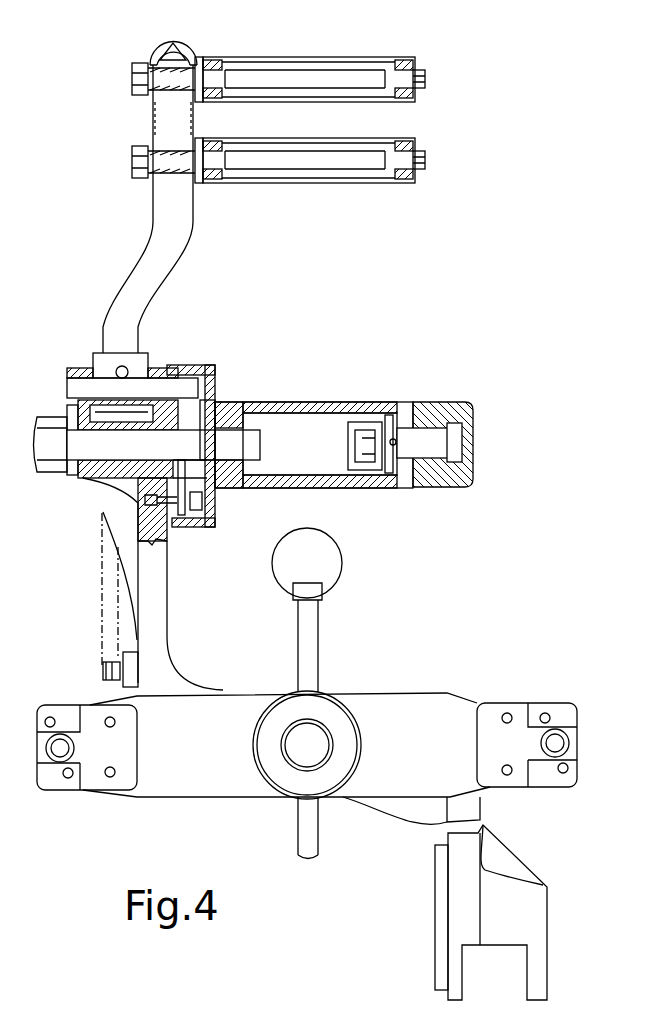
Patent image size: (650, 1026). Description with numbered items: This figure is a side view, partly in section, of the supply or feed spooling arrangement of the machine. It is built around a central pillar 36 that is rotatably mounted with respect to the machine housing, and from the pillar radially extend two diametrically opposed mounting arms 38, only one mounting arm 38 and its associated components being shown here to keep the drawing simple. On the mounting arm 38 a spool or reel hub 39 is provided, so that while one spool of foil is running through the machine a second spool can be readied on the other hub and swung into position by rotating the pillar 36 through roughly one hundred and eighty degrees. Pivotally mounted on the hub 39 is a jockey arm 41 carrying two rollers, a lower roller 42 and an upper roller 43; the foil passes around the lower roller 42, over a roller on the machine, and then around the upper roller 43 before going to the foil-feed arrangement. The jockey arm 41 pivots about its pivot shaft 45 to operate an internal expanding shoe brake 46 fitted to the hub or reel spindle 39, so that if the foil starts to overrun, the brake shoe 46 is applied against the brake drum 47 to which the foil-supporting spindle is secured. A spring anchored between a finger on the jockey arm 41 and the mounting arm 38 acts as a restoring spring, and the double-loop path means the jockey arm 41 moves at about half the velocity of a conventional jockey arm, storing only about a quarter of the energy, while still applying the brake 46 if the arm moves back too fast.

The central pillar 36 is at (333, 712).
The mounting arm 38 is at (168, 637).
The spool or reel hub 39 is at (162, 366).
The jockey arm 41 is at (118, 281).
The lower roller 42 is at (340, 140).
The upper roller 43 is at (330, 57).
The pivot shaft 45 is at (75, 383).
The internal expanding shoe brake 46 is at (218, 410).
The brake drum 47 is at (213, 365).